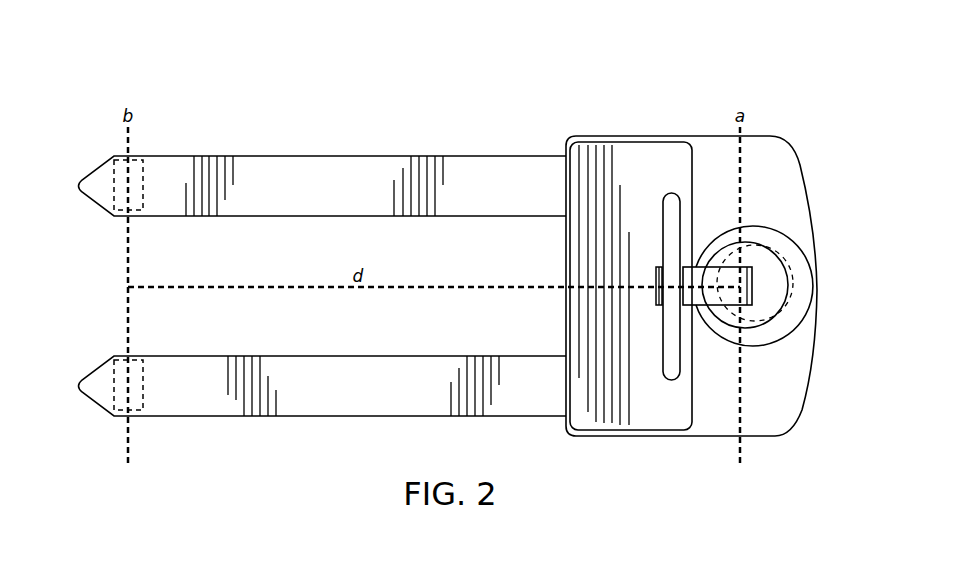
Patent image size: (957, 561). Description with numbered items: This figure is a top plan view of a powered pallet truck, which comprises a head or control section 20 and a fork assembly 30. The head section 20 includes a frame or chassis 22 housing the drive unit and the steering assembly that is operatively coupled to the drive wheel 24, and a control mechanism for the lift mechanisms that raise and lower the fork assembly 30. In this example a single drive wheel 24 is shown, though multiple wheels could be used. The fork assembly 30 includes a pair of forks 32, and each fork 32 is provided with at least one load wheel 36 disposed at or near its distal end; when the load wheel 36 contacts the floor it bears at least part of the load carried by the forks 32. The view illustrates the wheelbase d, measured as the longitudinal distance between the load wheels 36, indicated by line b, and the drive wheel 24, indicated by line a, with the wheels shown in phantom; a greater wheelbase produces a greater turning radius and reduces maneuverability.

The head section 20 is at (568, 102).
The body 22 is at (756, 186).
The drive wheel 24 is at (797, 295).
The fork assembly 30 is at (566, 102).
The fork 32 is at (308, 193).
The load wheel 36 is at (120, 202).